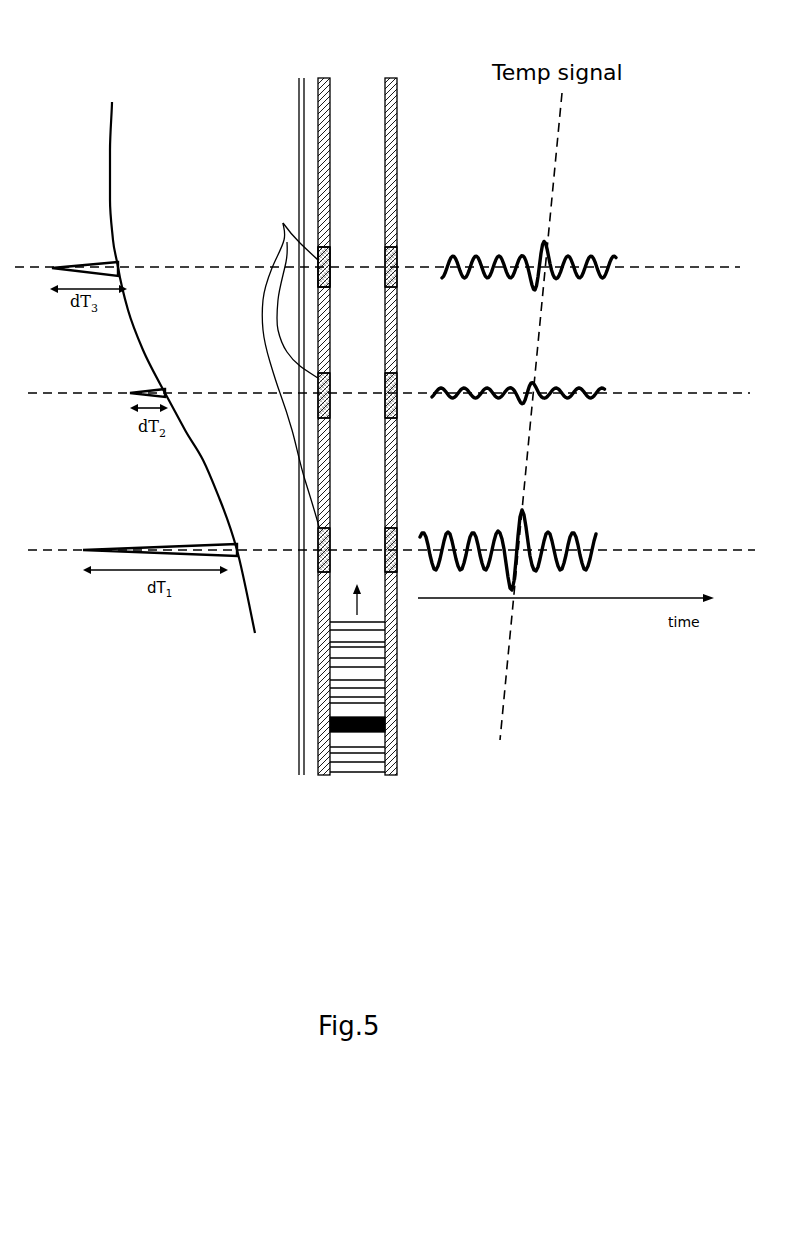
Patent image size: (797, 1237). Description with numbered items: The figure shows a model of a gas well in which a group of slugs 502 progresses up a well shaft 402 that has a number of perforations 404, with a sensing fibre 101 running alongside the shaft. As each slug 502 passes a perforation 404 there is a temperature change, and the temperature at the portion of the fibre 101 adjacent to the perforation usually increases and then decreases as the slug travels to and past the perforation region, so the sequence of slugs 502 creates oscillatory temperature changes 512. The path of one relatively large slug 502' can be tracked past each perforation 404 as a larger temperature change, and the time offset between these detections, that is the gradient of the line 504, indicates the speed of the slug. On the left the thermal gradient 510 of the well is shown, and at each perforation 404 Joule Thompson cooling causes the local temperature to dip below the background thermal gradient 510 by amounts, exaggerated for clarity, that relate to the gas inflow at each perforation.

The fibre 101 is at (298, 763).
The well shaft 402 is at (398, 94).
The perforations 404 is at (283, 223).
The slugs 502 is at (402, 697).
The large slug 502' is at (290, 736).
The gradient line 504 is at (552, 202).
The thermal gradient 510 is at (246, 598).
The oscillatory temperature changes 512 is at (606, 248).